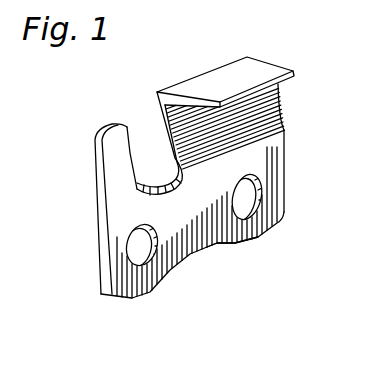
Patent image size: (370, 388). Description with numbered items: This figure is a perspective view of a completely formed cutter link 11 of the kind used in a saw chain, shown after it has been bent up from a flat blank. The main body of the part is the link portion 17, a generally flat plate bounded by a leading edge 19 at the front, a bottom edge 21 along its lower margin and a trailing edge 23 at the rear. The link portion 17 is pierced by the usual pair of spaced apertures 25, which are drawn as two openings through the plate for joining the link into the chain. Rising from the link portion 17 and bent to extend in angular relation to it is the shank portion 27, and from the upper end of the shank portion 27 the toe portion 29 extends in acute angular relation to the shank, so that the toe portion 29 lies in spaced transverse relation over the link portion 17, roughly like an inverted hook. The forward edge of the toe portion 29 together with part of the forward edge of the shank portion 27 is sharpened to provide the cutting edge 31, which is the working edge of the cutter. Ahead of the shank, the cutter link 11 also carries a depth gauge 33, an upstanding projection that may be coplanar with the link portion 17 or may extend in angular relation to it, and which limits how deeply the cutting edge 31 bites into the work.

The cutter link 11 is at (200, 264).
The link portion 17 is at (208, 214).
The leading edge 19 is at (102, 263).
The bottom edge 21 is at (228, 244).
The trailing edge 23 is at (280, 167).
The spaced apertures 25 is at (128, 243).
The shank portion 27 is at (267, 108).
The toe portion 29 is at (253, 73).
The cutting edge 31 is at (188, 98).
The depth gauge 33 is at (107, 147).